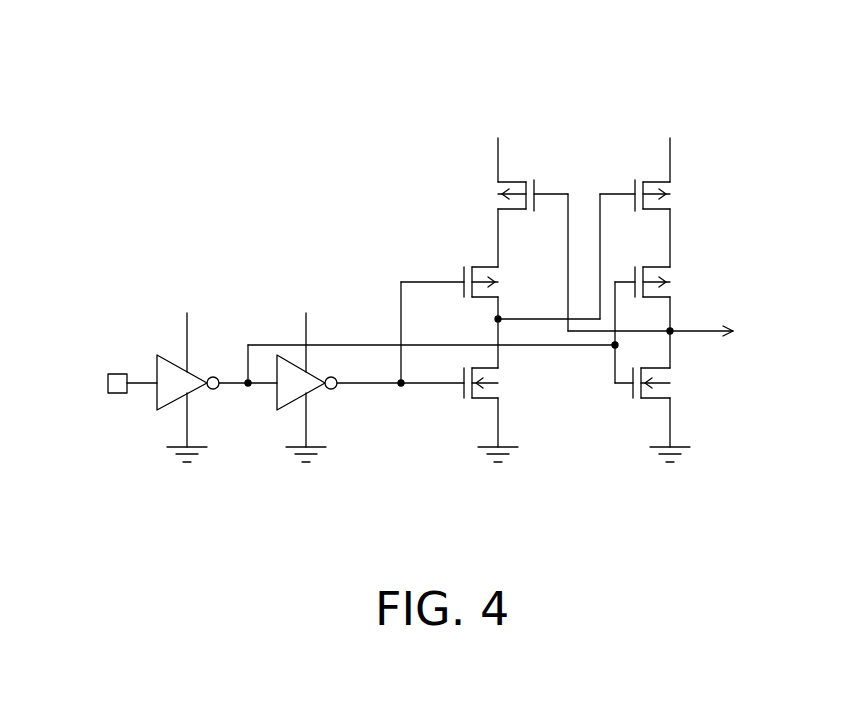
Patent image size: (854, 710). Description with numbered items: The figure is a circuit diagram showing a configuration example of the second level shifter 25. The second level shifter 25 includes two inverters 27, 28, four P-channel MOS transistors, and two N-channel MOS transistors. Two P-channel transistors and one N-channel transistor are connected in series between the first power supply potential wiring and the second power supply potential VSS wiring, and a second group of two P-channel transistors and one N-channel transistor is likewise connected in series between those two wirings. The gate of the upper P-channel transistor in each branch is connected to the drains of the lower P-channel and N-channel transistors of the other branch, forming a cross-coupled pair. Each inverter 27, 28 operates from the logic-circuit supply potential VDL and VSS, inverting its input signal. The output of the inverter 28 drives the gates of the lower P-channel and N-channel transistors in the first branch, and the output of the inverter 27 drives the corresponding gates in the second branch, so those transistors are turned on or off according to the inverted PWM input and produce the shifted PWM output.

The second level shifter 25 is at (460, 42).
The inverter 27 is at (193, 390).
The inverter 28 is at (312, 390).